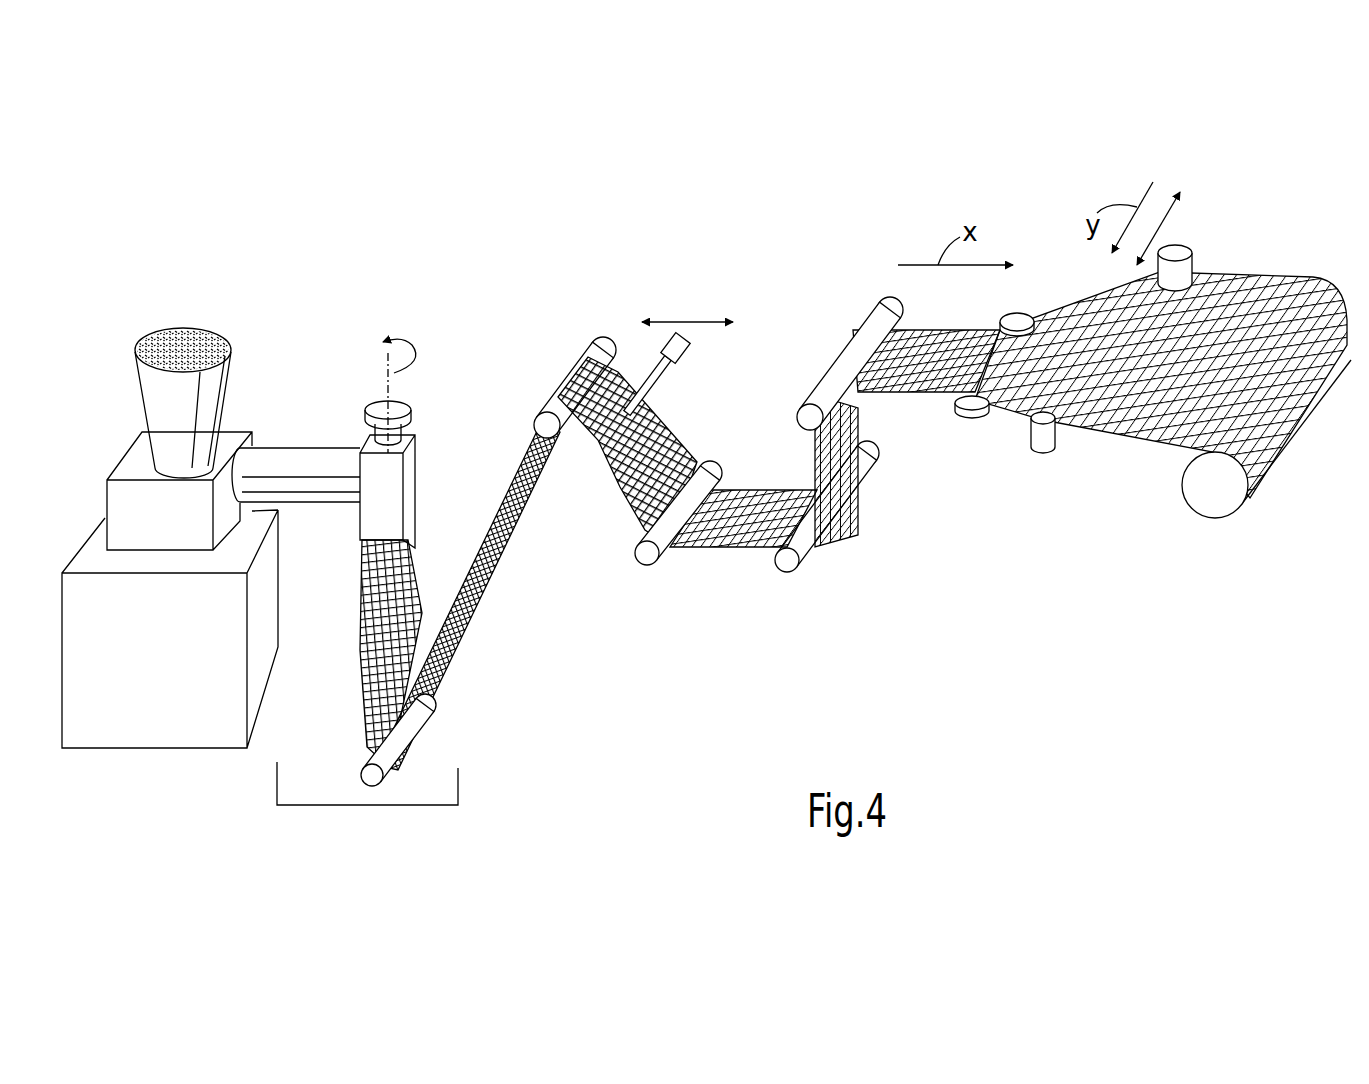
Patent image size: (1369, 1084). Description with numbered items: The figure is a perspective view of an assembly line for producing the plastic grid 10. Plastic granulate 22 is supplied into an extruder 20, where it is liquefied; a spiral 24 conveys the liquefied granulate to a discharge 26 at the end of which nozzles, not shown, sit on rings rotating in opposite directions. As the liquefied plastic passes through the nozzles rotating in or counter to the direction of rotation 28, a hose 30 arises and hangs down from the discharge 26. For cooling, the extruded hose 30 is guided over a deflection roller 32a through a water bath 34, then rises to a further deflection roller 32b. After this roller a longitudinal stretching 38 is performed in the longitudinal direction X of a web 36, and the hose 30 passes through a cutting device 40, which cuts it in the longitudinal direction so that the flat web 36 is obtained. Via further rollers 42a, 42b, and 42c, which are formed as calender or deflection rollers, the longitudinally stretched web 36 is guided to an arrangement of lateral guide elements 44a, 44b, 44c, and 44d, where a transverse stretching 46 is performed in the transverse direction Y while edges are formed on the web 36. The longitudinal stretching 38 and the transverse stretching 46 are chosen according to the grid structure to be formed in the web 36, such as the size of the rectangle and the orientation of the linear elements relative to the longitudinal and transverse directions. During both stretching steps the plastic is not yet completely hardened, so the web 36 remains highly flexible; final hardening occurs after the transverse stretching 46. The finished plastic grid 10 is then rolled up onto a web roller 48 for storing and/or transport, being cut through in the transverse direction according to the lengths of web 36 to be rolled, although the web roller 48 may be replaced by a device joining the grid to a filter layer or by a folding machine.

The plastic grid 10 is at (1307, 270).
The extruder 20 is at (231, 383).
The fiber material 22 is at (193, 330).
The spiral 24 is at (298, 457).
The discharge 26 is at (390, 487).
The direction of rotation 28 is at (420, 345).
The hose 30 is at (355, 597).
The deflection roller 32a is at (360, 773).
The further deflection roller 32b is at (612, 340).
The water bath 34 is at (430, 788).
The web 36 is at (623, 487).
The longitudinal stretching 38 is at (686, 320).
The cutting device 40 is at (665, 381).
The roller 42a is at (653, 567).
The roller 42b is at (790, 565).
The roller 42c is at (802, 413).
The lateral guide element 44a is at (1017, 316).
The lateral guide element 44b is at (957, 411).
The lateral guide element 44c is at (1190, 252).
The lateral guide element 44d is at (1043, 457).
The transverse stretching 46 is at (1160, 230).
The web roller 48 is at (1207, 485).